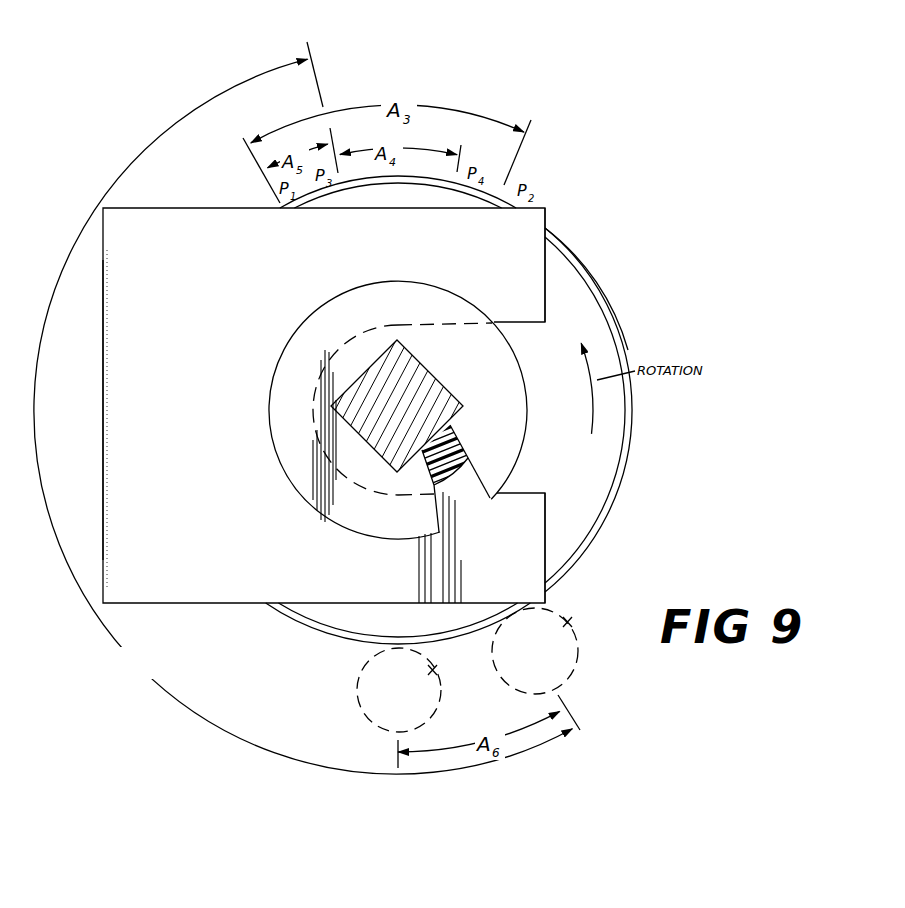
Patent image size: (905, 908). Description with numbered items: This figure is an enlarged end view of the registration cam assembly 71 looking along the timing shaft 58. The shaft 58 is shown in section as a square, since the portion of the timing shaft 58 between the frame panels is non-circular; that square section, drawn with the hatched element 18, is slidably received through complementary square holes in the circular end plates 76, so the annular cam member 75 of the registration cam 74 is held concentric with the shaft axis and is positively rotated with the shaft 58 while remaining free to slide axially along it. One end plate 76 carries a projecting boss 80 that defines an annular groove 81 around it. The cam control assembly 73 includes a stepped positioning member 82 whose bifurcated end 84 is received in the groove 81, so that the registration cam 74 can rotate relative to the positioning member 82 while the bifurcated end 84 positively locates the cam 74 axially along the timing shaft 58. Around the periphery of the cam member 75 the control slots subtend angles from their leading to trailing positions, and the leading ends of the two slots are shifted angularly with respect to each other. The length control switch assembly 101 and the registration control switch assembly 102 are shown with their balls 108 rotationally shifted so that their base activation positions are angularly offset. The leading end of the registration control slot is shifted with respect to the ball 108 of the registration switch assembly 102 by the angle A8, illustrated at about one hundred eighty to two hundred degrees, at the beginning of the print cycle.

The permanent magnet 18 is at (424, 367).
The timing shaft 58 is at (447, 397).
The registration cam assembly 71 is at (617, 302).
The cam control assembly 73 is at (198, 207).
The registration cam 74 is at (623, 471).
The annular cam member 75 is at (624, 453).
The circular end plates 76 is at (566, 479).
The projecting boss 80 is at (516, 367).
The annular groove 81 is at (464, 473).
The stepped positioning member 82 is at (107, 392).
The bifurcated end 84 is at (546, 243).
The length control switch assembly 101 is at (372, 695).
The registration control switch assembly 102 is at (563, 667).
The balls 108 is at (436, 671).
The angular shift A8 is at (303, 408).